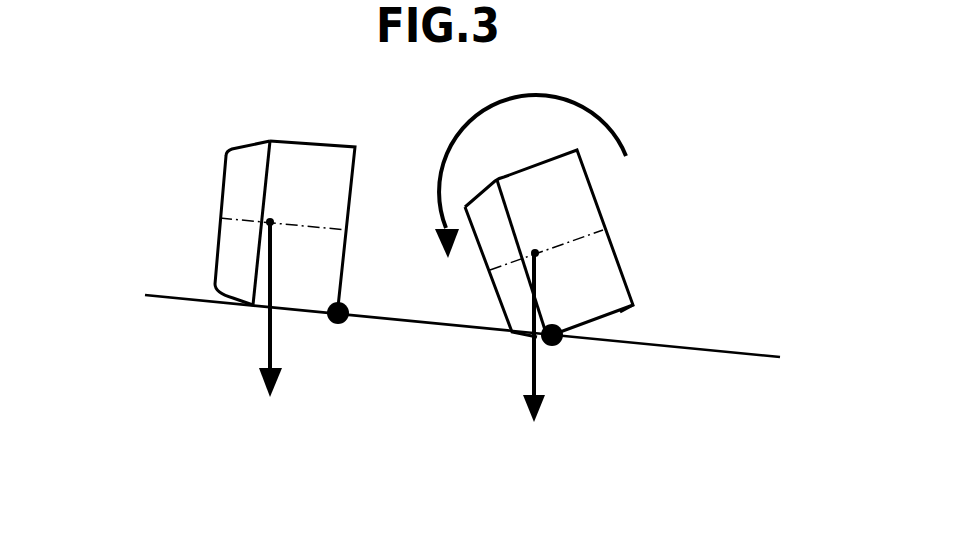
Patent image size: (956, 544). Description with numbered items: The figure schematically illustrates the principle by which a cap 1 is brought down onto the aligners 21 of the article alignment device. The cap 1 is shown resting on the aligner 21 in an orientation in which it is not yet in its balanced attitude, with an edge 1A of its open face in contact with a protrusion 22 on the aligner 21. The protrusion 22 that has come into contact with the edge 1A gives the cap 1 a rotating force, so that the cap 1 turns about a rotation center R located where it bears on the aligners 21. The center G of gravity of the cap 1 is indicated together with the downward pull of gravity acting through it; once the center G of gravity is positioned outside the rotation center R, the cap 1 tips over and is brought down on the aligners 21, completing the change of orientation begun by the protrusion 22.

The cap 1 is at (305, 140).
The edge of the open face of the cap 1A is at (637, 305).
The aligner 21 is at (163, 297).
The protrusion 22 is at (343, 302).
The center of gravity G is at (272, 220).
The rotation center R is at (342, 325).